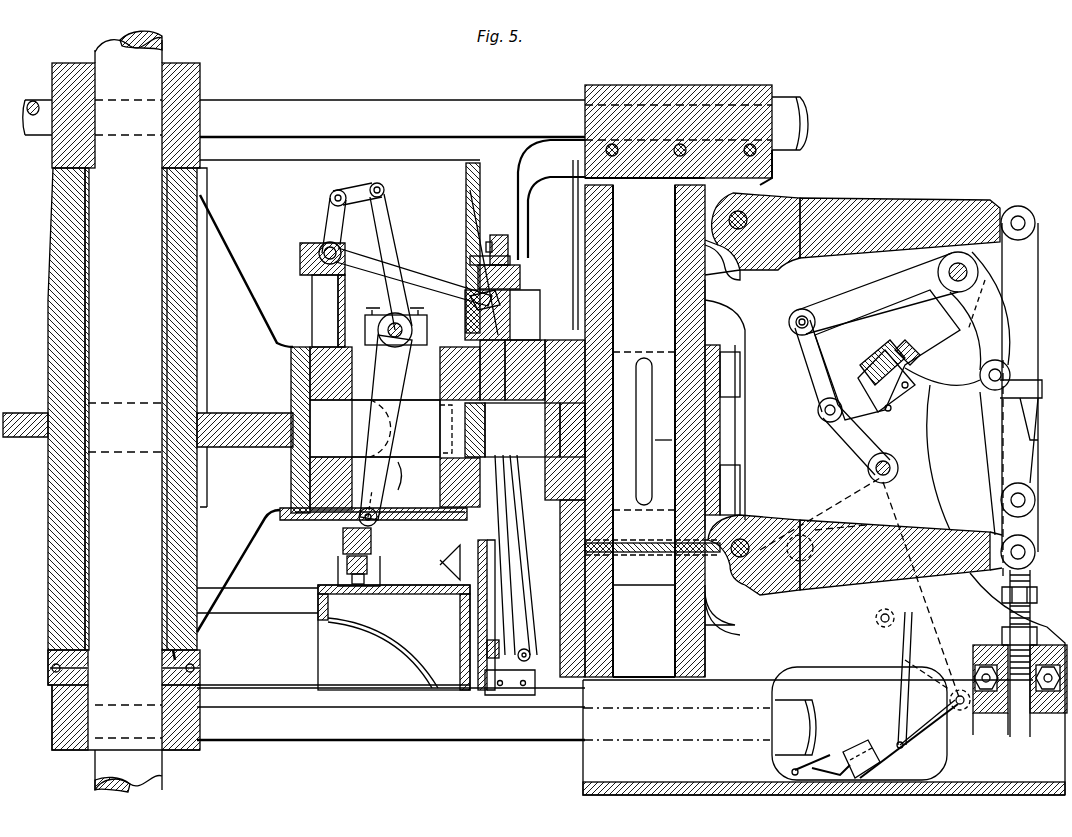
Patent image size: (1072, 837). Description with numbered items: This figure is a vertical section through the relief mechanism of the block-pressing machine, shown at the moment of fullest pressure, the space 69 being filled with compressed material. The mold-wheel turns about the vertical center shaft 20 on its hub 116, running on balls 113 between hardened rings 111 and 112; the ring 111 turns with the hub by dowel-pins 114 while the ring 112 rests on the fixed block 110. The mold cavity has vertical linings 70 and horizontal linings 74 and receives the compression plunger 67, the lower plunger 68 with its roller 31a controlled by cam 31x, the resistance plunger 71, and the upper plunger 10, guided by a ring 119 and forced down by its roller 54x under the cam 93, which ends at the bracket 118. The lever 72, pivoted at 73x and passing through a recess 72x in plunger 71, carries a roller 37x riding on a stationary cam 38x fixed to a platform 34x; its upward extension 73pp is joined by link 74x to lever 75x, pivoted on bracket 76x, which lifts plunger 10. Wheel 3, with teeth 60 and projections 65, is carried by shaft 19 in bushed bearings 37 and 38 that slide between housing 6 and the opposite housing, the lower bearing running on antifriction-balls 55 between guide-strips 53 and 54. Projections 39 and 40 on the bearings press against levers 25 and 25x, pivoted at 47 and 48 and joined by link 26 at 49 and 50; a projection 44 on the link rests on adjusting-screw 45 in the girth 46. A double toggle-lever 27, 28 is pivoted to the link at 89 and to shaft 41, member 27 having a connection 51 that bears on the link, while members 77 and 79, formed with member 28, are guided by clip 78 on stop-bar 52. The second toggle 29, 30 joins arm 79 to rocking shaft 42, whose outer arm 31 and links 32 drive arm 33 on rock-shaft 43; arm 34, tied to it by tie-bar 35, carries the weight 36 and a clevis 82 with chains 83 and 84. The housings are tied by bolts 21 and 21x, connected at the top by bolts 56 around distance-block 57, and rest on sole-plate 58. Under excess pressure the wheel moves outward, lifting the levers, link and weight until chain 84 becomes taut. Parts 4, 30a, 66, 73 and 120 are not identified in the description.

The wheel 3 is at (664, 450).
The bearing 4 is at (540, 340).
The housing 6 is at (775, 180).
The upper plunger 10 is at (510, 335).
The shaft 19 is at (656, 431).
The vertical shaft 20 is at (125, 411).
The bolt 21 is at (362, 100).
The bolt 21x is at (345, 741).
The lever 25 is at (893, 200).
The lever 25x is at (898, 535).
The link 26 is at (1020, 387).
The toggle-lever member 27 is at (985, 428).
The toggle-lever member 28 is at (957, 318).
The second toggle member 29 is at (808, 378).
The second toggle member 30 is at (856, 458).
The plate 30a is at (478, 632).
The arm 31 is at (846, 494).
The roller 31a is at (487, 652).
The cam 31x is at (505, 693).
The links 32 is at (862, 602).
The arm 33 is at (928, 664).
The arm 34 is at (926, 730).
The stationary platform 34x is at (338, 580).
The tie-bar 35 is at (902, 703).
The weight 36 is at (857, 757).
The bushed bearing 37 is at (585, 255).
The roller 37x is at (343, 545).
The bushed bearing 38 is at (592, 582).
The stationary cam 38x is at (370, 565).
The projection 39 is at (730, 284).
The projection 40 is at (715, 612).
The shaft 41 is at (948, 276).
The rocking shaft 42 is at (890, 482).
The rock-shaft 43 is at (965, 712).
The projection 44 is at (1031, 582).
The adjusting-screw 45 is at (1032, 622).
The girth 46 is at (988, 645).
The pivot 47 is at (765, 262).
The pivot 48 is at (760, 535).
The connection 49 is at (1025, 222).
The connection 50 is at (1025, 552).
The connection 51 is at (1042, 388).
The stop-bar 52 is at (872, 372).
The guide-strip 53 is at (634, 535).
The guide-strip 54 is at (650, 568).
The roller 54x is at (522, 280).
The antifriction-balls 55 is at (640, 555).
The bolts 56 is at (774, 158).
The distance-block 57 is at (710, 85).
The sole-plate 58 is at (672, 758).
The teeth 60 is at (740, 390).
The teeth 65 is at (745, 435).
The block 66 is at (562, 430).
The plunger 67 is at (522, 430).
The lower plunger 68 is at (516, 558).
The space 69 is at (488, 437).
The vertically-extending lining 70 is at (450, 420).
The resistance block or plunger 71 is at (432, 429).
The lever 72 is at (380, 430).
The recess 72x is at (417, 476).
The member 73 is at (582, 510).
The upward extension 73pp is at (385, 250).
The pivot 73x is at (428, 365).
The horizontally-extending lining 74 is at (455, 395).
The link 74x is at (355, 196).
The lever 75x is at (425, 280).
The ring or bracket 76x is at (312, 300).
The member 77 is at (887, 355).
The clip 78 is at (912, 342).
The arm or member 79 is at (873, 294).
The clevis 82 is at (831, 764).
The chain 83 is at (812, 760).
The chain 84 is at (775, 762).
The pivot 89 is at (1025, 500).
The cam or incline 93 is at (497, 238).
The fixed block 110 is at (200, 750).
The hardened ring 111 is at (200, 652).
The hardened ring 112 is at (200, 678).
The balls 113 is at (200, 662).
The dowel-pins 114 is at (162, 650).
The hub 116 is at (200, 532).
The bracket 118 is at (545, 193).
The ring 119 is at (466, 180).
The box 120 is at (394, 637).